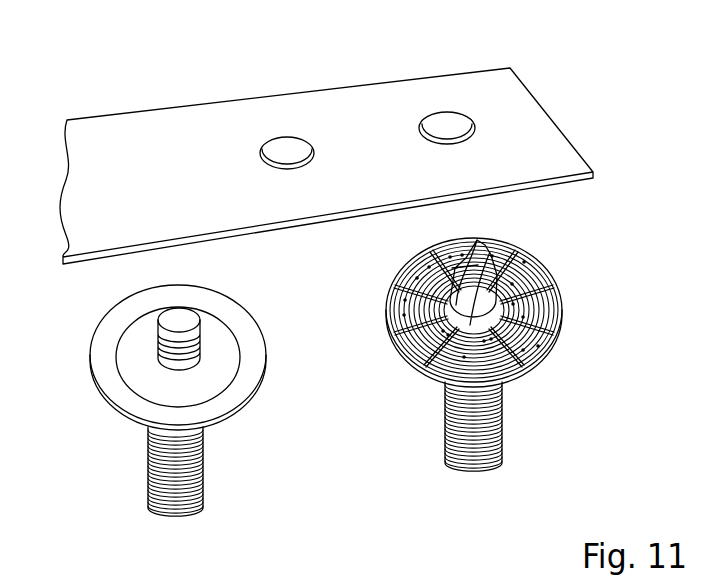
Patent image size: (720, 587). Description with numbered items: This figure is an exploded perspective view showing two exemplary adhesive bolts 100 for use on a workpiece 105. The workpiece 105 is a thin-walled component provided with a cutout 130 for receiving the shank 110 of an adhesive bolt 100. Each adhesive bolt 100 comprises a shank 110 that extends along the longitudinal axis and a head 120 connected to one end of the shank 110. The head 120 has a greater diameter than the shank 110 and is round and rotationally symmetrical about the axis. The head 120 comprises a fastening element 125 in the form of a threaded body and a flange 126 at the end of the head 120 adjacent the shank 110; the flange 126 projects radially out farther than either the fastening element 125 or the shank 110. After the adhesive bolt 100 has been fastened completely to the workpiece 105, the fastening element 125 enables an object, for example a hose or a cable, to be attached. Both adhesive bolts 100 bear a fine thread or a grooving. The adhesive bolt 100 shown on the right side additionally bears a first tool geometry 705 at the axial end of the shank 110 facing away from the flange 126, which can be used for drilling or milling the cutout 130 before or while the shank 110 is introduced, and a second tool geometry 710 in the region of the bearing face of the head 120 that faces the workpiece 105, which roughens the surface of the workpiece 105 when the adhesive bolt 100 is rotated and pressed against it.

The adhesive bolt 100 is at (330, 379).
The workpiece 105 is at (167, 127).
The shank 110 is at (135, 330).
The head 120 is at (330, 327).
The fastening element 125 is at (213, 450).
The flange 126 is at (235, 301).
The cutout 130 is at (287, 143).
The first tool geometry 705 is at (562, 305).
The second tool geometry 710 is at (547, 273).